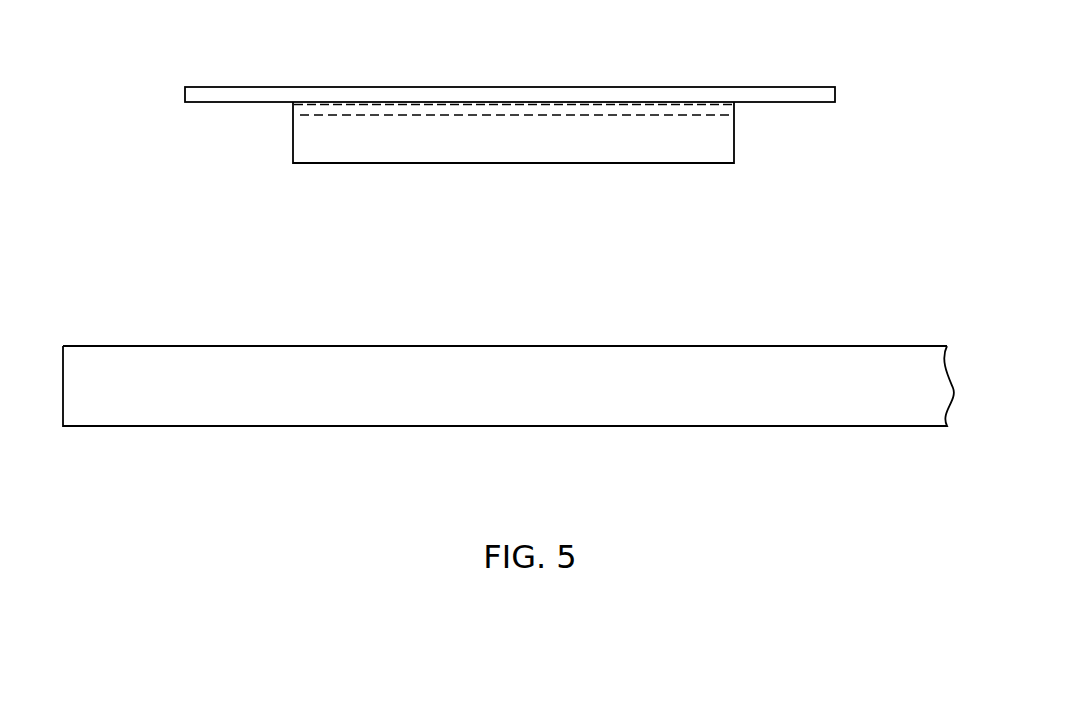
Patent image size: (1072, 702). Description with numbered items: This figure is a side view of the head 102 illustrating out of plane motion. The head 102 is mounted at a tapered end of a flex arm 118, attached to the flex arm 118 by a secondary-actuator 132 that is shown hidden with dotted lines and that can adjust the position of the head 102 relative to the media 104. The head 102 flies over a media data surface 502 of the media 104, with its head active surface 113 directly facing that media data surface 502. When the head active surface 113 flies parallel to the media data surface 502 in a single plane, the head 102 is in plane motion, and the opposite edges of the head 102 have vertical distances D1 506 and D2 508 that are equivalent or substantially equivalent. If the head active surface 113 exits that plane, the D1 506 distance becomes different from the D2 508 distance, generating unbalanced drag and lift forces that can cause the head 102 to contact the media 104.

The flex arm 118 is at (203, 93).
The secondary-actuator 132 is at (727, 106).
The head 102 is at (343, 150).
The head active surface 113 is at (423, 164).
The vertical distance D2 508 is at (293, 175).
The vertical distance D1 506 is at (733, 175).
The media data surface 502 is at (887, 346).
The media 104 is at (921, 389).